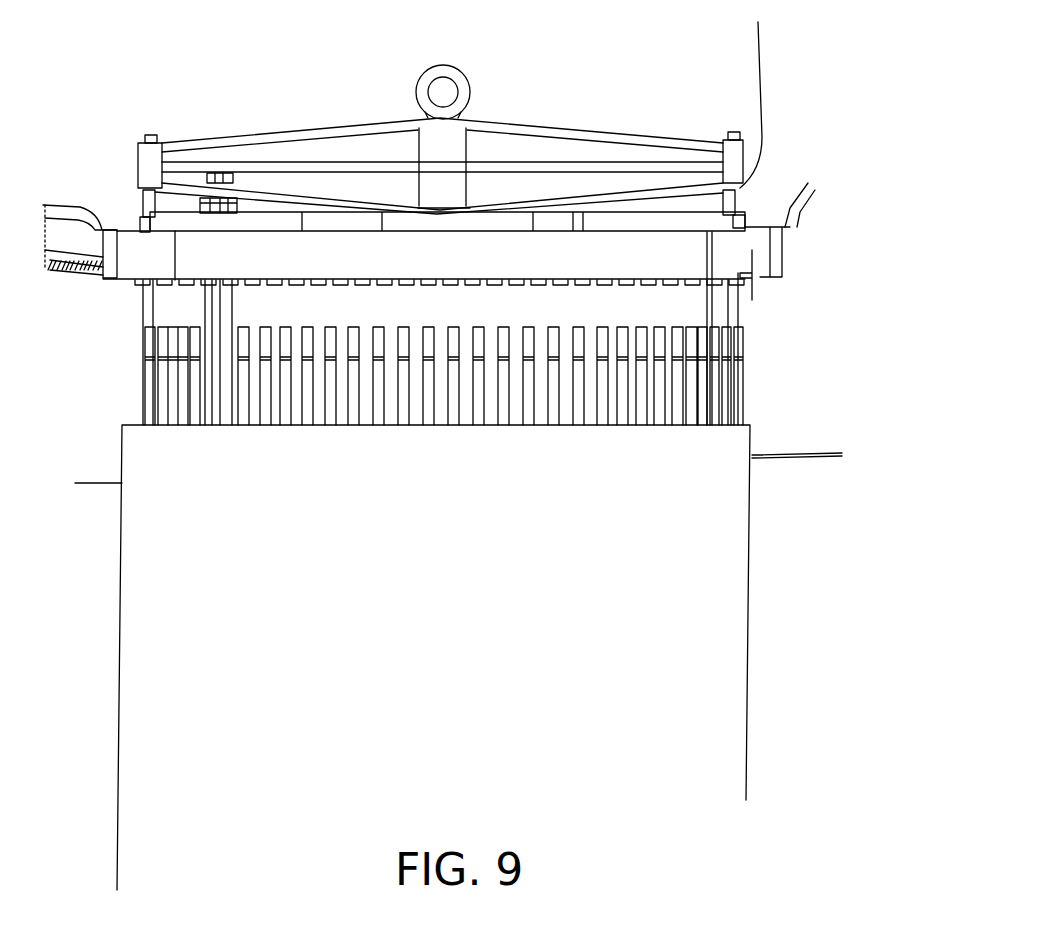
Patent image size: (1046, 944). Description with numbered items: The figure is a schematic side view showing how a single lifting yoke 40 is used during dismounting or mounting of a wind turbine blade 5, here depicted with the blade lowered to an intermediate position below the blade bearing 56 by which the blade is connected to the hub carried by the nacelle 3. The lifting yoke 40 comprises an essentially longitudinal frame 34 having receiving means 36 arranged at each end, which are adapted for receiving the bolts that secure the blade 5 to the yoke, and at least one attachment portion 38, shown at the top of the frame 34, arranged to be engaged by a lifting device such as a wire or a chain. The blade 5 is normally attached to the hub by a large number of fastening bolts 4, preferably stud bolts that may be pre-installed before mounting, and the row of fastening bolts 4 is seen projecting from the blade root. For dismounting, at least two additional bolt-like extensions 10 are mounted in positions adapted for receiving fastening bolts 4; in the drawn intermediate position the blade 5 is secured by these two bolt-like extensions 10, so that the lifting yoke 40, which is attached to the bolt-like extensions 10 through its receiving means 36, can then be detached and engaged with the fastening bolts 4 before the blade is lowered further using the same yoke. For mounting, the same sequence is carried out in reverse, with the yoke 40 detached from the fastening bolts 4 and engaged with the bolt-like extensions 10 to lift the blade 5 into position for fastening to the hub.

The lifting yoke 40 is at (603, 72).
The longitudinal frame 34 is at (328, 125).
The attachment portion 38 is at (473, 92).
The receiving means 36 is at (137, 165).
The bolt-like extensions 10 is at (150, 130).
The fastening bolts 4 is at (415, 500).
The nacelle 3 is at (778, 190).
The blade bearing 56 is at (752, 282).
The blade 5 is at (715, 763).